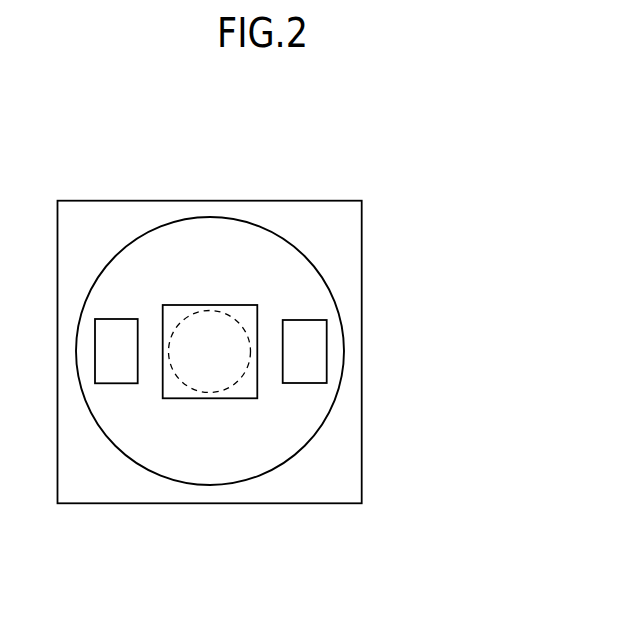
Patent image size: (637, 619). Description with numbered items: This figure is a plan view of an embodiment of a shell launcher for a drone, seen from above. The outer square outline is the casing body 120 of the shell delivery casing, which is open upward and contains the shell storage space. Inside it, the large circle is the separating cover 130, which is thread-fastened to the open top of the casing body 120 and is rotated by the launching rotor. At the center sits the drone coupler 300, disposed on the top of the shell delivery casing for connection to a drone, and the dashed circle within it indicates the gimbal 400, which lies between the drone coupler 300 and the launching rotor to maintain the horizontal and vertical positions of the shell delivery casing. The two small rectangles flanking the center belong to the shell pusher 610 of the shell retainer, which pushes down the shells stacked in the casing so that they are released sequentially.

The casing body 120 is at (302, 492).
The separating cover 130 is at (303, 431).
The drone coupler 300 is at (237, 305).
The gimbal 400 is at (199, 399).
The shell pusher 610 is at (327, 340).